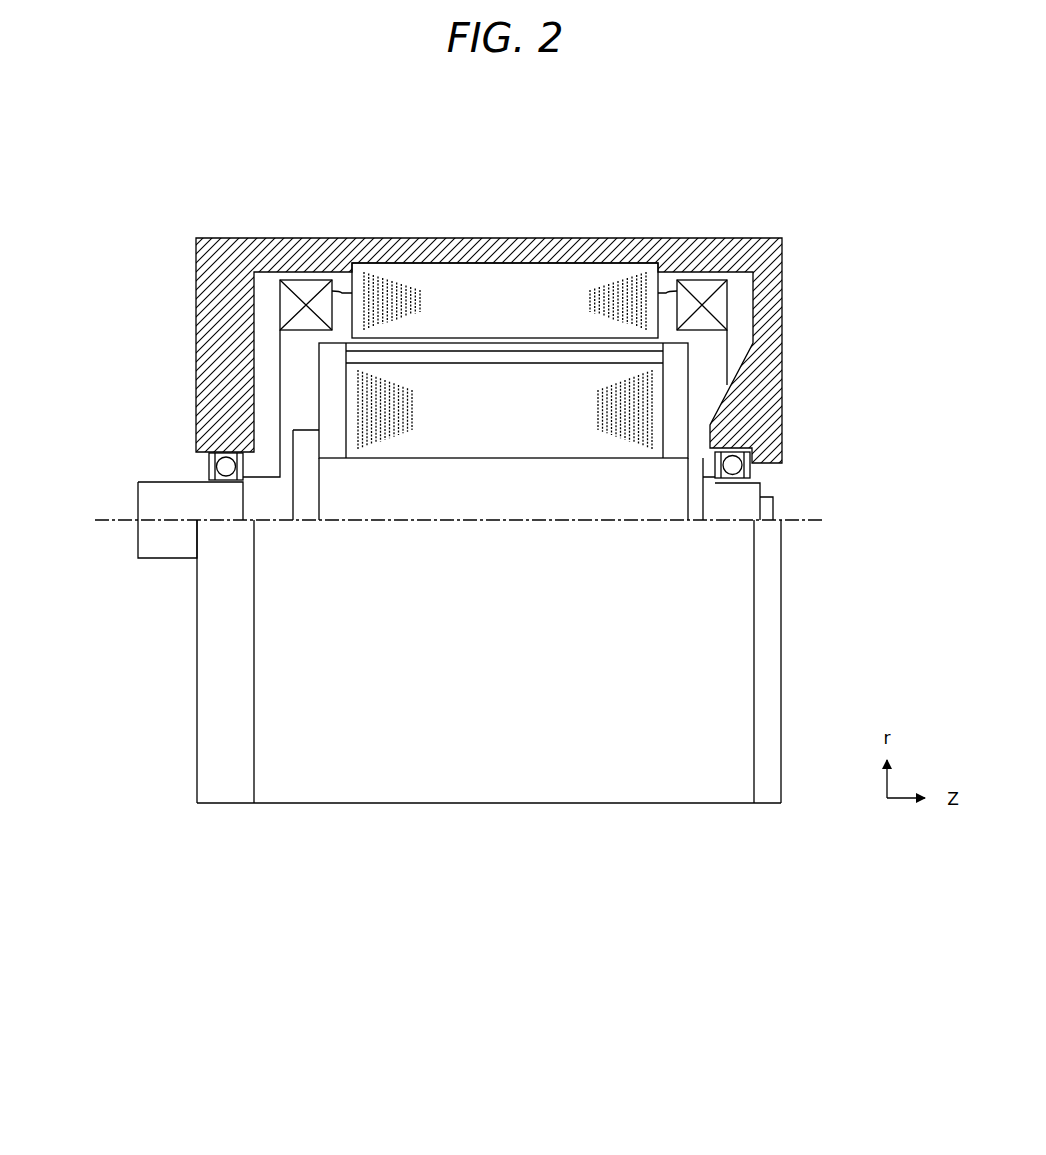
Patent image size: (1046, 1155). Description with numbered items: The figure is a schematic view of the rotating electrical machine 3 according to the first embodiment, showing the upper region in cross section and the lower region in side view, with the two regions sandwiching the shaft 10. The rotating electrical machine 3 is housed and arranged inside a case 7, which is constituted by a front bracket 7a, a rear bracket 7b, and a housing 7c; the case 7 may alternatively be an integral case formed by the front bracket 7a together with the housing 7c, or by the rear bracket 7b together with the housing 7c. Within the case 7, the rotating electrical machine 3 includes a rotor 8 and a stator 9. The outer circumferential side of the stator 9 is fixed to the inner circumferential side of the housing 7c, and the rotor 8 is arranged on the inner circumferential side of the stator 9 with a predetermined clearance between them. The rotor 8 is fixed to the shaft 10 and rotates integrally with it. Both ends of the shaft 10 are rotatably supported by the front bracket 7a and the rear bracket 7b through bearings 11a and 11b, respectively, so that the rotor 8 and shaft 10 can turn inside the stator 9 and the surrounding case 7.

The rotating electrical machine 3 is at (732, 203).
The case 7 is at (491, 757).
The front bracket 7a is at (223, 805).
The rear bracket 7b is at (767, 805).
The housing 7c is at (489, 853).
The rotor 8 is at (455, 385).
The stator 9 is at (537, 285).
The shaft 10 is at (157, 507).
The bearing 11a is at (208, 472).
The bearing 11b is at (752, 453).